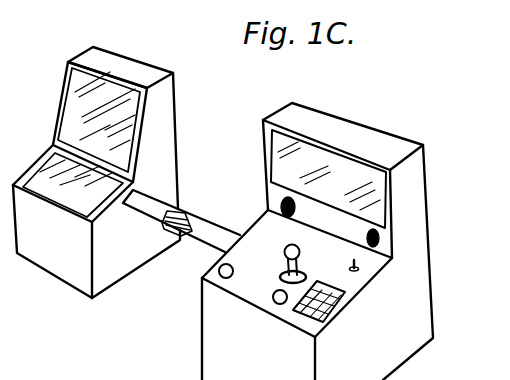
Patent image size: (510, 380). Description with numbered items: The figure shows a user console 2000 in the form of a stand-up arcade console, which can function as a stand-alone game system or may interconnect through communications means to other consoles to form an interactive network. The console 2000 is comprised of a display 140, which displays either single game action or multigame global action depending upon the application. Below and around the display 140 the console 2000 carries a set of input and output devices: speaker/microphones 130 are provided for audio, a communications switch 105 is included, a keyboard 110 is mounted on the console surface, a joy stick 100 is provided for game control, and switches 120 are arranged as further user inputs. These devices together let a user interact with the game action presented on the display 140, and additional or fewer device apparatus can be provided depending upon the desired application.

The user console 2000 is at (40, 265).
The display 140 is at (268, 142).
The speaker/microphones 130 is at (281, 204).
The joy stick 100 is at (285, 256).
The switches 120 is at (277, 295).
The keyboard 110 is at (347, 295).
The communications switch 105 is at (359, 268).